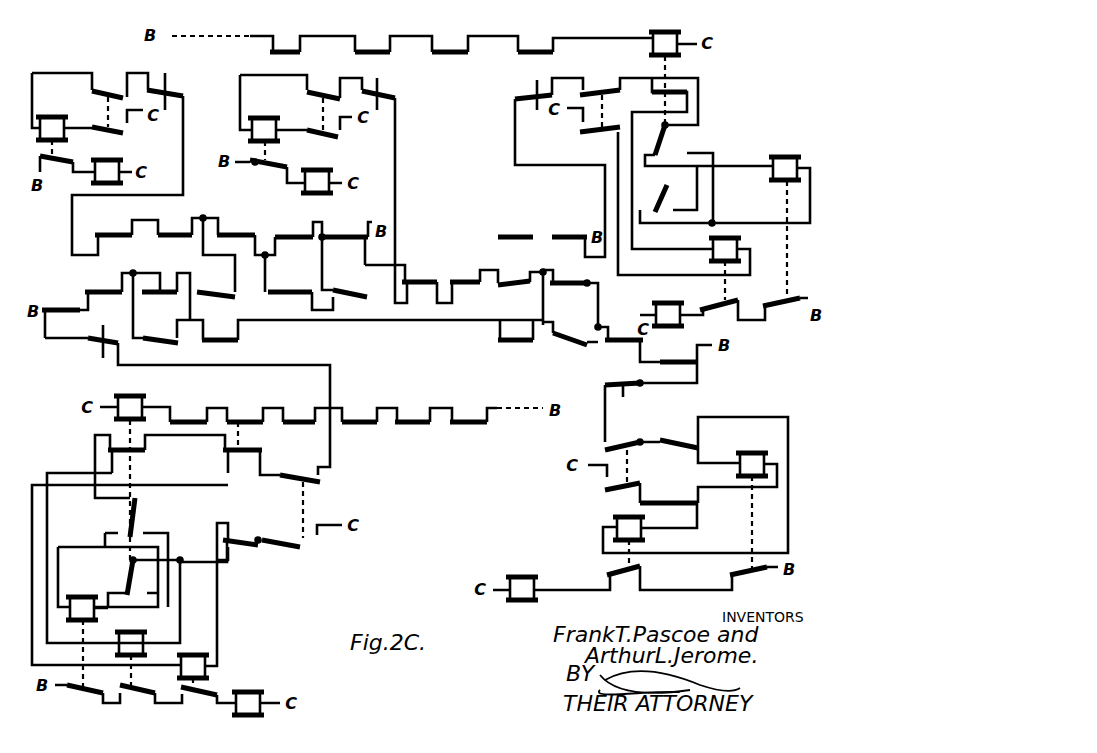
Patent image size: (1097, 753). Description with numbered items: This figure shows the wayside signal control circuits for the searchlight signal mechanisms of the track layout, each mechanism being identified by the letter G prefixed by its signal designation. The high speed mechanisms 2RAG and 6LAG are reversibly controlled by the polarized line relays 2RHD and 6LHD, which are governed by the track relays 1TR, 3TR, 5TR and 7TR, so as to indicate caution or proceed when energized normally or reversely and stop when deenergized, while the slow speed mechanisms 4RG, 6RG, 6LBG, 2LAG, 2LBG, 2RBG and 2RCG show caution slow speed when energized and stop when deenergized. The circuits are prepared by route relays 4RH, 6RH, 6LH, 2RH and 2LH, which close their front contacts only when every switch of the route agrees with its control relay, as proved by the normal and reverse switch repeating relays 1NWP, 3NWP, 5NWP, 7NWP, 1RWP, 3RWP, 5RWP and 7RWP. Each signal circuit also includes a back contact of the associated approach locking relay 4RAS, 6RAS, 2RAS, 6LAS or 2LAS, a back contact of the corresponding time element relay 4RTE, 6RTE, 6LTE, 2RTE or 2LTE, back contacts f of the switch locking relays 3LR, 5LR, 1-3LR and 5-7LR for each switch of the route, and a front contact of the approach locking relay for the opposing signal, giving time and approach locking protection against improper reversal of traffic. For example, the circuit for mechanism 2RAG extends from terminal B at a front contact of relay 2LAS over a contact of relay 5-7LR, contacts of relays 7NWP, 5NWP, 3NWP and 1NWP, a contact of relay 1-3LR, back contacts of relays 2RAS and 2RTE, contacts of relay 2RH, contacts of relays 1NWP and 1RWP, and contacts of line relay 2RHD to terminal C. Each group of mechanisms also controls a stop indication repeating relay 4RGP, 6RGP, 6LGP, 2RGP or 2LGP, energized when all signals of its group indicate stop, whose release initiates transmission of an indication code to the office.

The route relay 4RH is at (92, 90).
The time element relay 4RTE is at (157, 72).
The signal mechanism 4RG is at (55, 117).
The stop indication repeating relay 4RGP is at (89, 158).
The switch repeating relay 3NWP is at (236, 216).
The track relay 3TR is at (372, 31).
The switch repeating relay 5NWP is at (405, 216).
The track relay 5TR is at (539, 31).
The polarized line relay 6LHD is at (670, 109).
The route relay 6RH is at (333, 96).
The time element relay 6RTE is at (387, 76).
The signal mechanism 6RG is at (270, 118).
The stop indication repeating relay 6RGP is at (300, 169).
The time element relay 6LTE is at (536, 77).
The route relay 6LH is at (599, 93).
The signal mechanism 6LAG is at (785, 218).
The approach locking relay 4RAS is at (109, 221).
The switch locking relay 3LR is at (237, 219).
The approach locking relay 6LAS is at (460, 220).
The signal mechanism 6LBG is at (734, 260).
The approach locking relay 2RAS is at (52, 286).
The switch locking relay 1-3LR is at (106, 274).
The switch repeating relay 1NWP is at (201, 337).
The switch repeating relay 3RWP is at (206, 257).
The approach locking relay 2LAS is at (484, 309).
The switch repeating relay 5RWP is at (430, 276).
The approach locking relay 6RAS is at (421, 264).
The switch locking relay 5LR is at (464, 267).
The switch repeating relay 7NWP is at (548, 382).
The stop indication repeating relay 6LGP is at (666, 302).
The time element relay 2RTE is at (108, 321).
The switch repeating relay 1RWP is at (204, 423).
The switch repeating relay 7RWP is at (625, 374).
The switch locking relay 5-7LR is at (620, 317).
The time element relay 2LTE is at (616, 365).
The polarized line relay 2RHD is at (131, 395).
The track relay 1TR is at (186, 402).
The track relay 7TR is at (473, 402).
The route relay 2RH is at (214, 489).
The route relay 2LH is at (628, 448).
The signal mechanism 2LAG is at (753, 501).
The signal mechanism 2LBG is at (609, 532).
The signal mechanism 2RAG is at (120, 595).
The signal mechanism 2RBG is at (133, 651).
The signal mechanism 2RCG is at (205, 656).
The stop indication repeating relay 2RGP is at (248, 690).
The stop indication repeating relay 2LGP is at (526, 575).